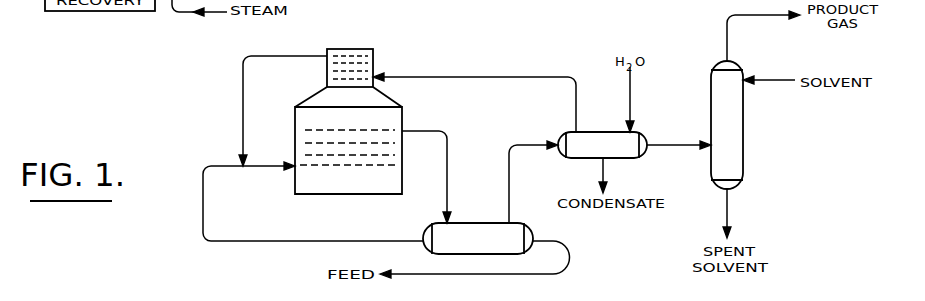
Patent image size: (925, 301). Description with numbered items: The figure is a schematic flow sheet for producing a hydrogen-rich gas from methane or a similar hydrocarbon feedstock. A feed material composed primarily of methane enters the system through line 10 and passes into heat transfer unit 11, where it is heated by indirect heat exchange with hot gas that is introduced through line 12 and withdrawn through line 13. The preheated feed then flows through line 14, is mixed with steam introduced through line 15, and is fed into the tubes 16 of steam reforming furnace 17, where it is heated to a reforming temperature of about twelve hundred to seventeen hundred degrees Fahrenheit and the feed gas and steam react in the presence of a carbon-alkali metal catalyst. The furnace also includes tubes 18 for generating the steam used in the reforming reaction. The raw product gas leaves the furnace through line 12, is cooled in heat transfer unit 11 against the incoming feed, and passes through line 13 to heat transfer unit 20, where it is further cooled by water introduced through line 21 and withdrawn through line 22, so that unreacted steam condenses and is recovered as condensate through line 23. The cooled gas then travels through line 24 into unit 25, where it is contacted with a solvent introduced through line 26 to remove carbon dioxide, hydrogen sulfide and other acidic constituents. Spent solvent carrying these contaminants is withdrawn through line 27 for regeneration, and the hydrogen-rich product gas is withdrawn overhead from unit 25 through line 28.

The line 10 is at (579, 268).
The heat transfer unit 11 is at (517, 231).
The line 12 is at (447, 158).
The line 13 is at (510, 192).
The line 14 is at (345, 238).
The line 15 is at (243, 108).
The tubes 16 is at (381, 140).
The steam reforming furnace 17 is at (318, 96).
The tubes 18 is at (353, 58).
The heat transfer unit 20 is at (572, 138).
The line 21 is at (632, 93).
The line 22 is at (486, 77).
The line 23 is at (605, 166).
The line 24 is at (680, 145).
The unit 25 is at (738, 132).
The line 26 is at (778, 81).
The line 27 is at (729, 207).
The line 28 is at (727, 42).